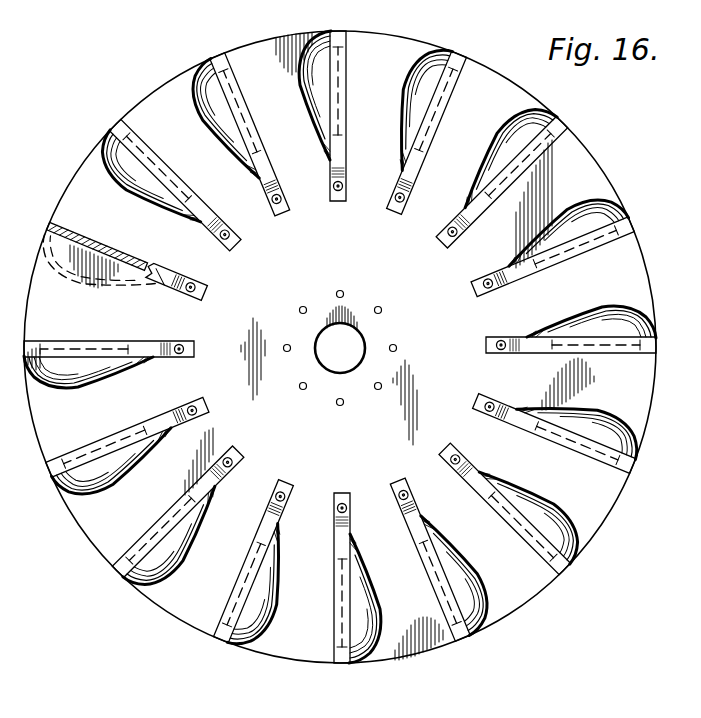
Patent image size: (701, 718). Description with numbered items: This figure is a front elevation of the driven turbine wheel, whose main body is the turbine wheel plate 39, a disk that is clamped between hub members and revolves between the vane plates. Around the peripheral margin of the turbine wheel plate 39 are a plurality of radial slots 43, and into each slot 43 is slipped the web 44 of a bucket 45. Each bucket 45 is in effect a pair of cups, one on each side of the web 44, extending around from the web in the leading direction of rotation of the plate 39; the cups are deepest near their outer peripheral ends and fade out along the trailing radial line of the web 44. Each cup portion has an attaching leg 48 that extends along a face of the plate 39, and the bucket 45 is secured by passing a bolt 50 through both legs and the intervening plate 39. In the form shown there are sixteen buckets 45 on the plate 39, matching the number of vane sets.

The turbine wheel plate 39 is at (585, 158).
The radial slots 43 is at (84, 243).
The web 44 is at (100, 251).
The bucket 45 is at (120, 180).
The attaching leg 48 is at (178, 294).
The bolt 50 is at (201, 289).